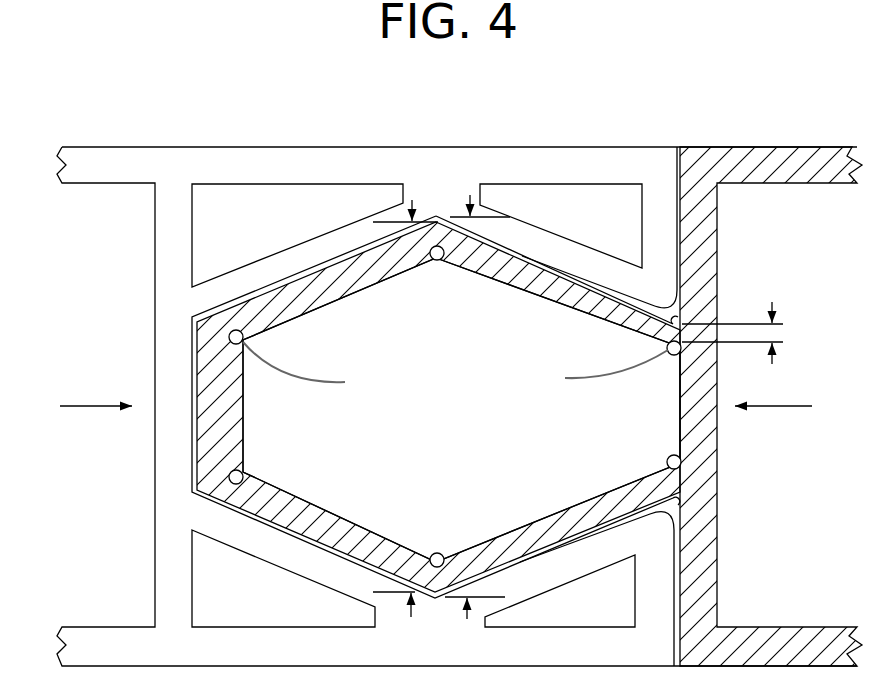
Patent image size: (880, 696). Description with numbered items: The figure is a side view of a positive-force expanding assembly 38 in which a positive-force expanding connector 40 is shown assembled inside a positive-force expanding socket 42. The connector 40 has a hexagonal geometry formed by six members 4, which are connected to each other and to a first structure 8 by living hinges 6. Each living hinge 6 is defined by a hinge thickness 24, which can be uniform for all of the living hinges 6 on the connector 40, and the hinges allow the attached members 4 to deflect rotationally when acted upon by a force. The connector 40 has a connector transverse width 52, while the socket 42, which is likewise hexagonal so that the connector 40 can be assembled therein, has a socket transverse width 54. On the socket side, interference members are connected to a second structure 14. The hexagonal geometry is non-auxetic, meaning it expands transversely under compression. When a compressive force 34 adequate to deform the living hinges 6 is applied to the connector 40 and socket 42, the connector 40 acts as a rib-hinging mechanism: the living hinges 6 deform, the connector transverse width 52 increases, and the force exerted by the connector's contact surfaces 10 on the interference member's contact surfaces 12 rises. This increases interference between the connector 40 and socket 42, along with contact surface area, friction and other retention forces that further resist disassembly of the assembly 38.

The positive-force expanding assembly 38 is at (436, 333).
The second structure 14 is at (102, 194).
The first structure 8 is at (820, 206).
The connector contact surfaces 10 is at (584, 278).
The interference member contact surfaces 12 is at (531, 260).
The members 4 is at (349, 311).
The positive-force expanding connector 40 is at (456, 424).
The living hinges 6 is at (437, 265).
The positive-force expanding socket 42 is at (456, 190).
The connector transverse width 52 is at (409, 619).
The socket transverse width 54 is at (467, 622).
The hinge thickness 24 is at (735, 320).
The compressive force 34 is at (436, 424).